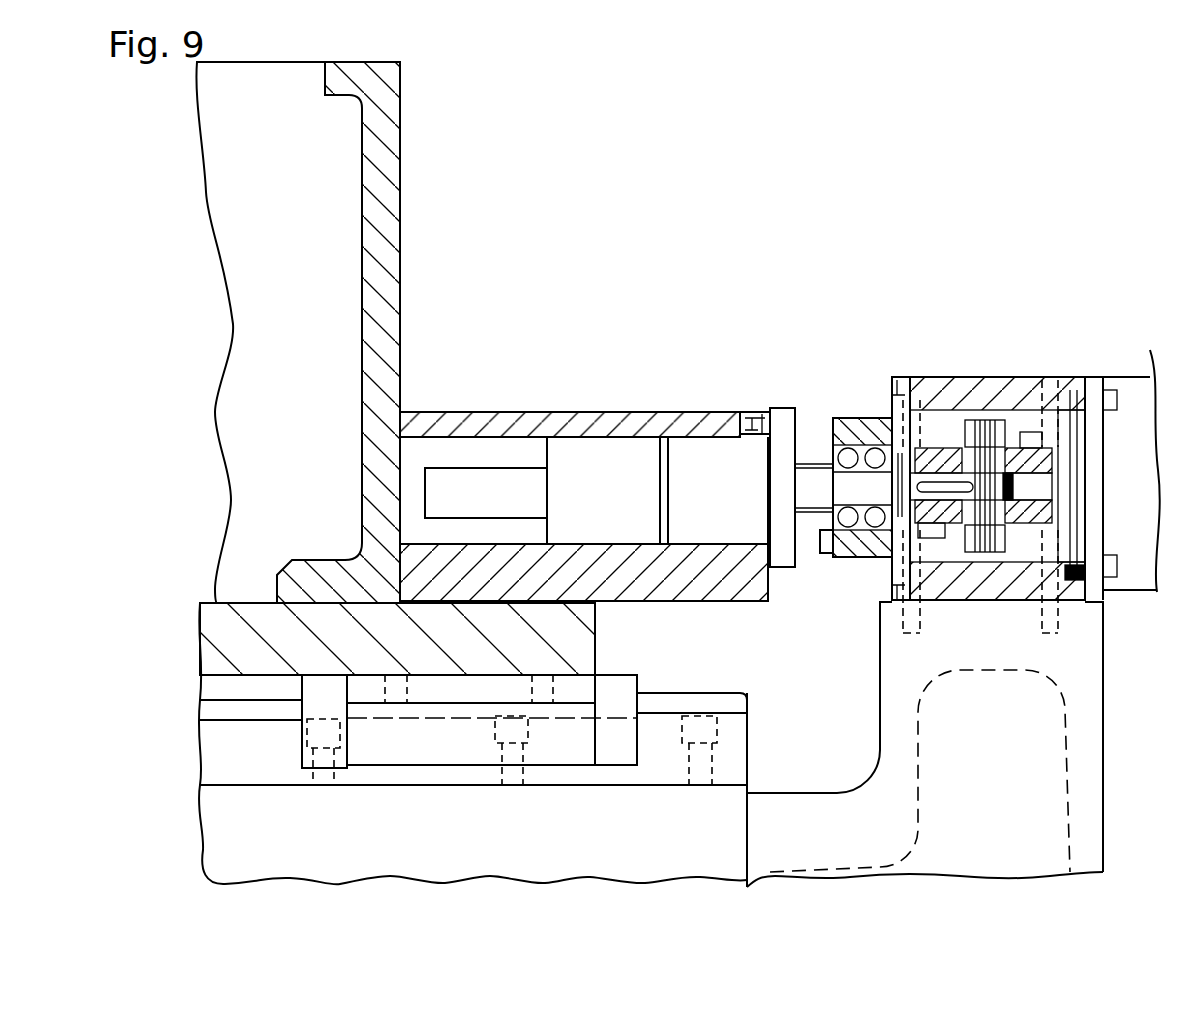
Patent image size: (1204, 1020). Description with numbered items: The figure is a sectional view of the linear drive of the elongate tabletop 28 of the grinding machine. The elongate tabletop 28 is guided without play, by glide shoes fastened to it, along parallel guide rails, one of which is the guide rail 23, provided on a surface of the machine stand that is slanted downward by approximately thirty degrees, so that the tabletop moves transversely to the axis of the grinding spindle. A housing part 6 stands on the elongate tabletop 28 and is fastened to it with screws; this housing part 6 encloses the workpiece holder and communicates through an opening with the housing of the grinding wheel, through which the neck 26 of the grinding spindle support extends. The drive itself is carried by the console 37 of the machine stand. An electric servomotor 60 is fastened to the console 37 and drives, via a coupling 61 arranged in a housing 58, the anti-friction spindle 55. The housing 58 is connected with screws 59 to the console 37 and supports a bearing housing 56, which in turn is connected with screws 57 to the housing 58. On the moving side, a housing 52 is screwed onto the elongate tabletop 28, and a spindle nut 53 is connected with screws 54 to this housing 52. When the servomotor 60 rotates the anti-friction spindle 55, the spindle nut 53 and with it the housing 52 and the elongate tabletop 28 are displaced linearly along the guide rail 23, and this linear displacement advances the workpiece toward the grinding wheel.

The housing part 6 is at (376, 208).
The guide rail 23 is at (745, 735).
The neck 26 is at (614, 748).
The elongate tabletop 28 is at (580, 628).
The console 37 is at (1088, 715).
The housing 52 is at (562, 420).
The spindle nut 53 is at (787, 450).
The screws 54 is at (785, 410).
The anti-friction spindle 55 is at (460, 487).
The bearing housing 56 is at (868, 420).
The screws 57 is at (828, 545).
The housing 58 is at (1000, 390).
The screws 59 is at (912, 385).
The electric servomotor 60 is at (1138, 395).
The coupling 61 is at (1022, 515).